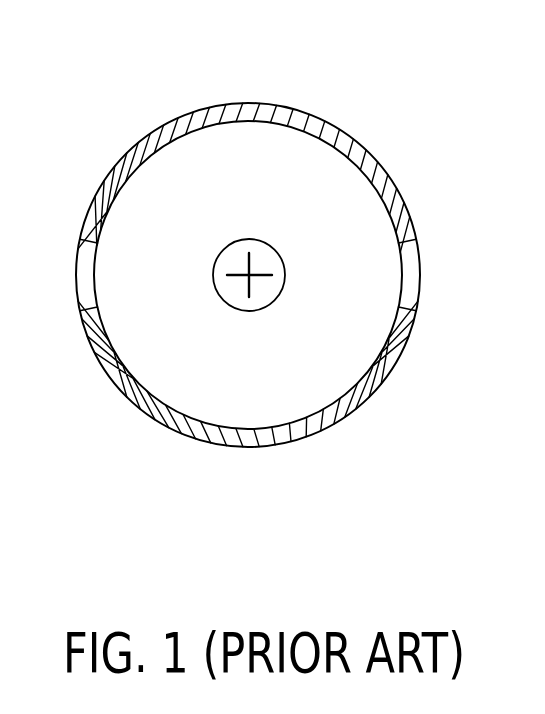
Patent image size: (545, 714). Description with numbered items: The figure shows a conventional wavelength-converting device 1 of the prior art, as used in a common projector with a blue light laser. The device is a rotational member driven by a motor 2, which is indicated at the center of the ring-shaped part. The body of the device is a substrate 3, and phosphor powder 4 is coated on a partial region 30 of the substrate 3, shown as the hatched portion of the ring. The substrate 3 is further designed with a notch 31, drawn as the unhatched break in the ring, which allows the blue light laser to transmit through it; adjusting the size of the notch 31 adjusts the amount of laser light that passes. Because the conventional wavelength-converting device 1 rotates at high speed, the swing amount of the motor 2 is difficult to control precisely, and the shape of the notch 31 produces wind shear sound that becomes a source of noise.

The conventional wavelength-converting device 1 is at (47, 77).
The motor 2 is at (253, 270).
The substrate 3 is at (315, 119).
The partial region 30 is at (285, 100).
The notch 31 is at (408, 275).
The phosphor powder 4 is at (388, 385).